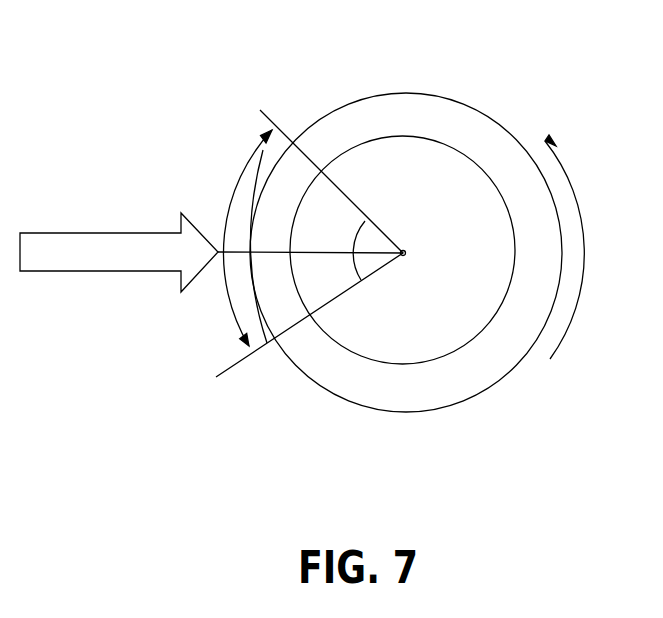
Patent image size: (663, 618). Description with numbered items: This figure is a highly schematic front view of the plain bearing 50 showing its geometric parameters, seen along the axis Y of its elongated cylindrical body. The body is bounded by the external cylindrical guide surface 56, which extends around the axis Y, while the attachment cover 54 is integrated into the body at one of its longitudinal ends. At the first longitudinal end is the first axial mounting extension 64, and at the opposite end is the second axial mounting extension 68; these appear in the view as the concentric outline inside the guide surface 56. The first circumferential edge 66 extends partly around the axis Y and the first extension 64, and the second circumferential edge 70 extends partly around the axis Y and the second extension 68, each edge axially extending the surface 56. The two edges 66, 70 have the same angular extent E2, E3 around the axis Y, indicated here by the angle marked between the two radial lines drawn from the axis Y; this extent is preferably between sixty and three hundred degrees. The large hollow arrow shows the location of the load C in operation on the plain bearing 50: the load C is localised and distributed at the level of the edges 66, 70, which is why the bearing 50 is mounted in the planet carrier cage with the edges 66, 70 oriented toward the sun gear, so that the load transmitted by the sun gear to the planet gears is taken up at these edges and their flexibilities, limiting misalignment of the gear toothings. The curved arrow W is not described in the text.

The plain bearing 50 is at (406, 253).
The attachment cover 54 is at (330, 103).
The external cylindrical guide surface 56 is at (386, 93).
The first axial mounting extension 64 is at (402, 307).
The second axial mounting extension 68 is at (398, 356).
The first circumferential edge 66 is at (204, 282).
The second circumferential edge 70 is at (262, 316).
The extent of the first circumferential edge E2 is at (329, 243).
The extent of the second circumferential edge E3 is at (366, 226).
The axis Y is at (406, 253).
The rotation direction W is at (583, 278).
The load C is at (73, 272).